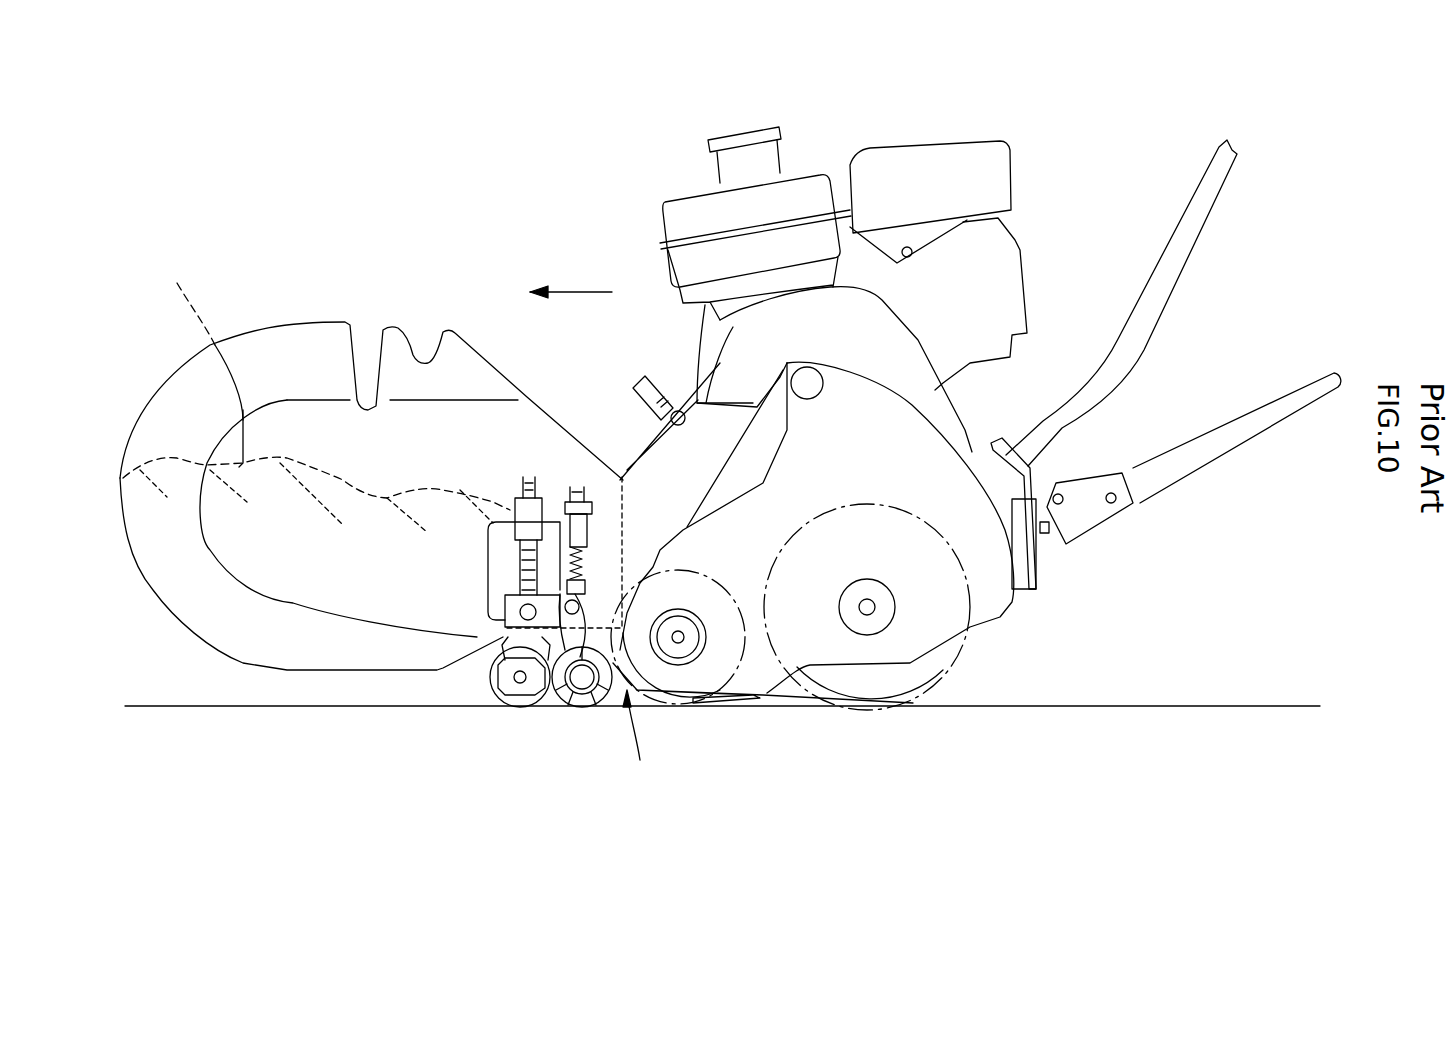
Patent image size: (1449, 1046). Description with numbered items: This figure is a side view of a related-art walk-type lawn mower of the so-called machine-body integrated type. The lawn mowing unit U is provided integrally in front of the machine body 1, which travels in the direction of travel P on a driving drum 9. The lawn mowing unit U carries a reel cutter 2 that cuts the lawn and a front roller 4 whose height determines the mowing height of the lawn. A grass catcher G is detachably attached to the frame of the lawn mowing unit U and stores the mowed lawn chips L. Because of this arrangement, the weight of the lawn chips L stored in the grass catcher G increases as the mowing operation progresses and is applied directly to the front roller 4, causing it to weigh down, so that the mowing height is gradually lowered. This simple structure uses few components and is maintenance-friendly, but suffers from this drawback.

The machine body 1 is at (930, 420).
The reel cutter 2 is at (677, 697).
The front roller 4 is at (503, 700).
The driving drum 9 is at (927, 670).
The grass catcher G is at (323, 330).
The lawn chips L is at (204, 337).
The direction of travel P is at (588, 292).
The lawn mowing unit U is at (645, 745).